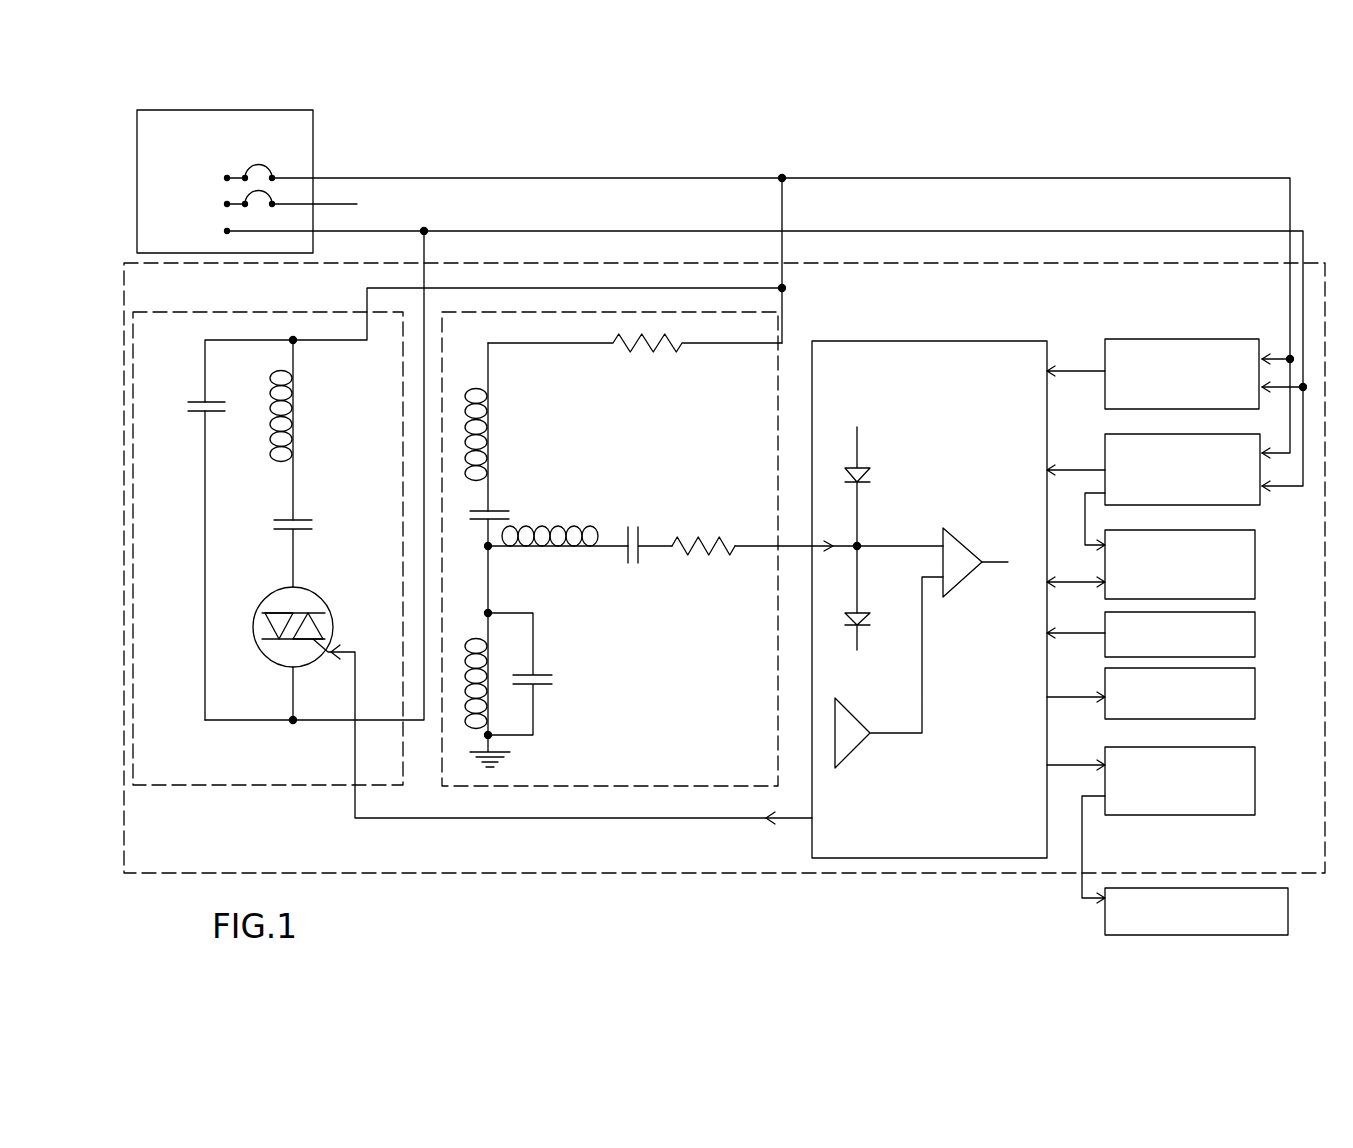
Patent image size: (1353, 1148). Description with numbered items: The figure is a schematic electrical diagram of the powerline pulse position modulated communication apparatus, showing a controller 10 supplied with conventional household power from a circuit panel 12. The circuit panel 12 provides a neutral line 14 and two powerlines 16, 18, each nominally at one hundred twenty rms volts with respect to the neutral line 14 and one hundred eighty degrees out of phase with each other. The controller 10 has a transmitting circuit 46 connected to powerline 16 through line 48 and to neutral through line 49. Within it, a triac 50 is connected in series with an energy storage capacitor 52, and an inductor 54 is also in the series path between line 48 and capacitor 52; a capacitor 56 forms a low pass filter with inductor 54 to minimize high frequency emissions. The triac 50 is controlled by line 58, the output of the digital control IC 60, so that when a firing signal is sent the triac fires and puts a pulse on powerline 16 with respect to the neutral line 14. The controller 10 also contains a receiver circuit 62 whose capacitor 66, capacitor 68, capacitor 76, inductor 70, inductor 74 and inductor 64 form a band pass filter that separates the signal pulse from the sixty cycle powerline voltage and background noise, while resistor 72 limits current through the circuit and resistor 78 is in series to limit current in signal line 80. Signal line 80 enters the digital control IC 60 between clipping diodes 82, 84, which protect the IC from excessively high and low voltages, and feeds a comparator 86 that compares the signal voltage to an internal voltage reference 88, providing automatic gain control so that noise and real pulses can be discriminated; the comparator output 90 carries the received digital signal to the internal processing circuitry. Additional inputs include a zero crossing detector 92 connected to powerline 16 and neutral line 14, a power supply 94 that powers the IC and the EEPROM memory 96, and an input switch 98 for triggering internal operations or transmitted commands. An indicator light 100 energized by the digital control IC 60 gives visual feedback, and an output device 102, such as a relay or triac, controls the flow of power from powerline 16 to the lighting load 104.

The transmitting controller 10 is at (440, 873).
The circuit panel 12 is at (305, 125).
The neutral line 14 is at (345, 231).
The powerline 16 is at (345, 178).
The powerline 18 is at (345, 204).
The transmitting circuit 46 is at (268, 787).
The line 48 is at (365, 303).
The line 49 is at (427, 256).
The triac 50 is at (310, 592).
The energy storage capacitor 52 is at (297, 520).
The inductor 54 is at (294, 397).
The capacitor 56 is at (197, 412).
The line 58 is at (355, 803).
The digital control integrated circuit 60 is at (908, 338).
The receiver circuit 62 is at (577, 787).
The inductor 64 is at (489, 401).
The capacitor 66 is at (498, 510).
The capacitor 68 is at (538, 686).
The inductor 70 is at (491, 703).
The resistor 72 is at (655, 346).
The inductor 74 is at (572, 526).
The capacitor 76 is at (641, 557).
The resistor 78 is at (700, 549).
The signal line 80 is at (787, 544).
The clipping diode 82 is at (862, 465).
The clipping diode 84 is at (862, 612).
The comparator 86 is at (958, 542).
The internal voltage reference 88 is at (860, 723).
The comparator output 90 is at (987, 558).
The zero crossing detector 92 is at (1103, 395).
The power supply 94 is at (1103, 448).
The EEPROM memory 96 is at (1257, 588).
The input switch 98 is at (1257, 645).
The indicator light 100 is at (1257, 685).
The output device 102 is at (1257, 775).
The load 104 is at (1290, 913).